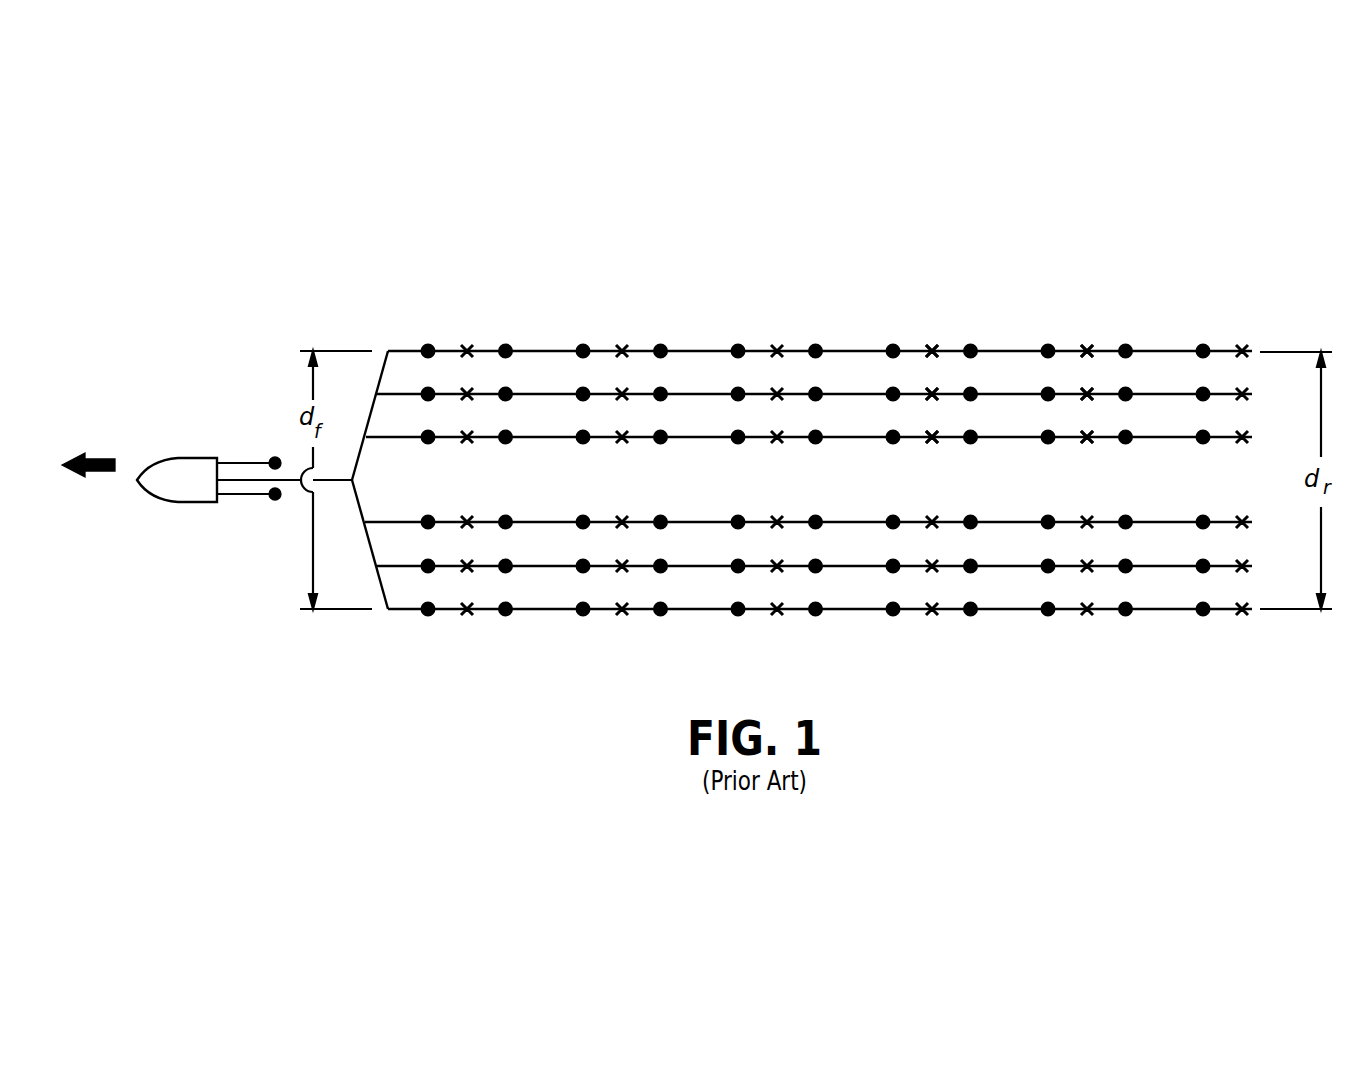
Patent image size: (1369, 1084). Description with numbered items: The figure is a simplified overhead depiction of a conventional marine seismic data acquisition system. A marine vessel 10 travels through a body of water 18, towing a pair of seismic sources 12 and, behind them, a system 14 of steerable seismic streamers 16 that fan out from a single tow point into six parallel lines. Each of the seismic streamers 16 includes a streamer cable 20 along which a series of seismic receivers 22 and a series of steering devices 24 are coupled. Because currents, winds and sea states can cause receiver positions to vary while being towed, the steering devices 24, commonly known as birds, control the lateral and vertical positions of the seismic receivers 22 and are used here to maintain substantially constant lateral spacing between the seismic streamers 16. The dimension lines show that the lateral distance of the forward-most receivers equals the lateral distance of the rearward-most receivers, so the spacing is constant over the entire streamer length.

The marine vessel 10 is at (167, 457).
The seismic sources 12 is at (271, 458).
The system of steerable seismic streamers 14 is at (676, 300).
The seismic streamers 16 is at (386, 427).
The body of water 18 is at (143, 570).
The streamer cable 20 is at (523, 437).
The seismic receivers 22 is at (818, 437).
The steering devices 24 is at (1087, 438).